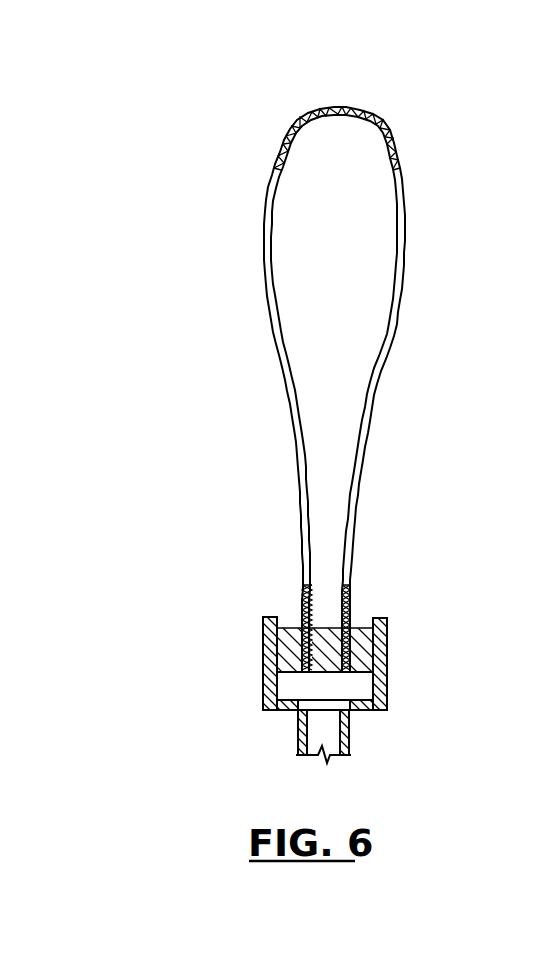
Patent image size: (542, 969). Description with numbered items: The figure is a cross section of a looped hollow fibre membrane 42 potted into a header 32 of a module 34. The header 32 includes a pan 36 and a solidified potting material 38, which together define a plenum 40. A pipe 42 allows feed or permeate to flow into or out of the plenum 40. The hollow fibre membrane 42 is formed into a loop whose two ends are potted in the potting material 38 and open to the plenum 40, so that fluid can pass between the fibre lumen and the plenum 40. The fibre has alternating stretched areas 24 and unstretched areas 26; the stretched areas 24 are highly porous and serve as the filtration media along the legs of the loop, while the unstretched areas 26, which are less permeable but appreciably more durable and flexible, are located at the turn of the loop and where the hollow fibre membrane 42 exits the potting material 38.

The stretched area 24 is at (367, 437).
The unstretched area 26 is at (302, 618).
The header 32 is at (234, 662).
The module 34 is at (198, 433).
The pan 36 is at (383, 698).
The potting material 38 is at (364, 623).
The plenum 40 is at (362, 684).
The hollow fibre membrane 42 is at (394, 341).